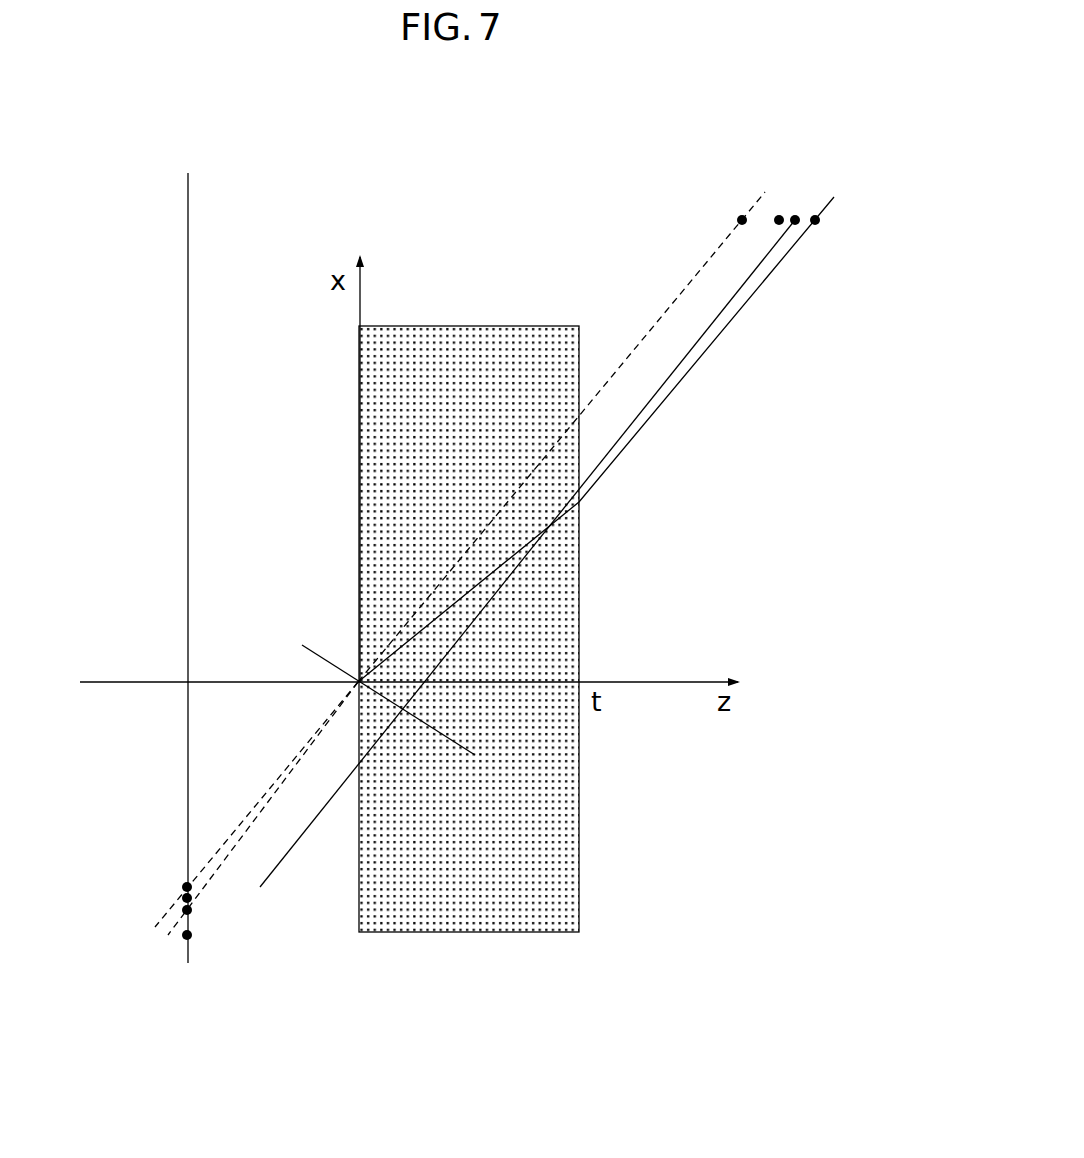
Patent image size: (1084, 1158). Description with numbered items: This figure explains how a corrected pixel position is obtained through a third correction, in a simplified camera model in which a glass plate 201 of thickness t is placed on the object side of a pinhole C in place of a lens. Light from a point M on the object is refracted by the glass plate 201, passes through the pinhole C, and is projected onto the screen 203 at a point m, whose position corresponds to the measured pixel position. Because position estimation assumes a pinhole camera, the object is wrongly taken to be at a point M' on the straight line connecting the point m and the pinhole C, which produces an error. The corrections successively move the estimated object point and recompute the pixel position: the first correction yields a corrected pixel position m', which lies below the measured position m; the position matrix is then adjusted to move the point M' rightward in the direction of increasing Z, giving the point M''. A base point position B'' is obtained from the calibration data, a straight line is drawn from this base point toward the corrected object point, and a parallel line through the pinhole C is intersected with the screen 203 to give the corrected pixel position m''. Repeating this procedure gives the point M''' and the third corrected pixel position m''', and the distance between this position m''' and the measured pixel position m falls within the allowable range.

The glass plate 201 is at (475, 325).
The screen 203 is at (188, 255).
The pinhole C is at (358, 680).
The base point position B'' is at (527, 553).
The point on the object M is at (852, 227).
The estimated object point M' is at (746, 181).
The corrected object point after second correction M'' is at (797, 181).
The corrected object point after third correction M''' is at (833, 181).
The measured pixel position m is at (167, 854).
The corrected pixel position 1 m' is at (248, 946).
The corrected pixel position 2 m'' is at (137, 905).
The corrected pixel position 3 m''' is at (136, 878).